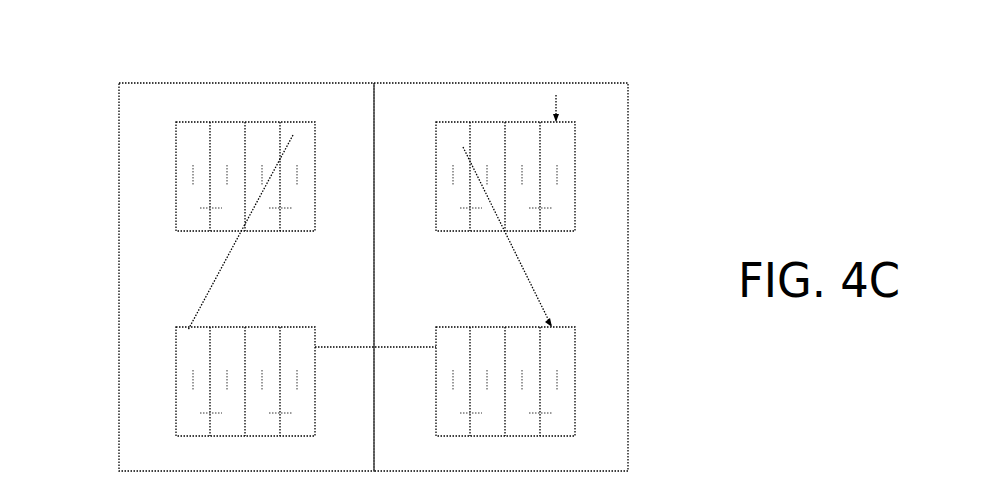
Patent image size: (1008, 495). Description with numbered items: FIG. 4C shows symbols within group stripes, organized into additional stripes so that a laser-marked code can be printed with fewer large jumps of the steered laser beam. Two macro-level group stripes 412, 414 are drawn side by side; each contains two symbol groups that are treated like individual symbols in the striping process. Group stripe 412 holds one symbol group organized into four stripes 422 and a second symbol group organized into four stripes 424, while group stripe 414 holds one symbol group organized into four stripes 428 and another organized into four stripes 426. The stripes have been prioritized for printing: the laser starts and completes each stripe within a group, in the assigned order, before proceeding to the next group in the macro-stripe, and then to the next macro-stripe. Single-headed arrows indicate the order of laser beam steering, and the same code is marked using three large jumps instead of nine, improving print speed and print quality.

The group stripe 412 is at (493, 62).
The group stripe 414 is at (224, 62).
The stripes 422 is at (612, 167).
The stripes 424 is at (610, 377).
The stripes 426 is at (160, 380).
The stripes 428 is at (157, 168).